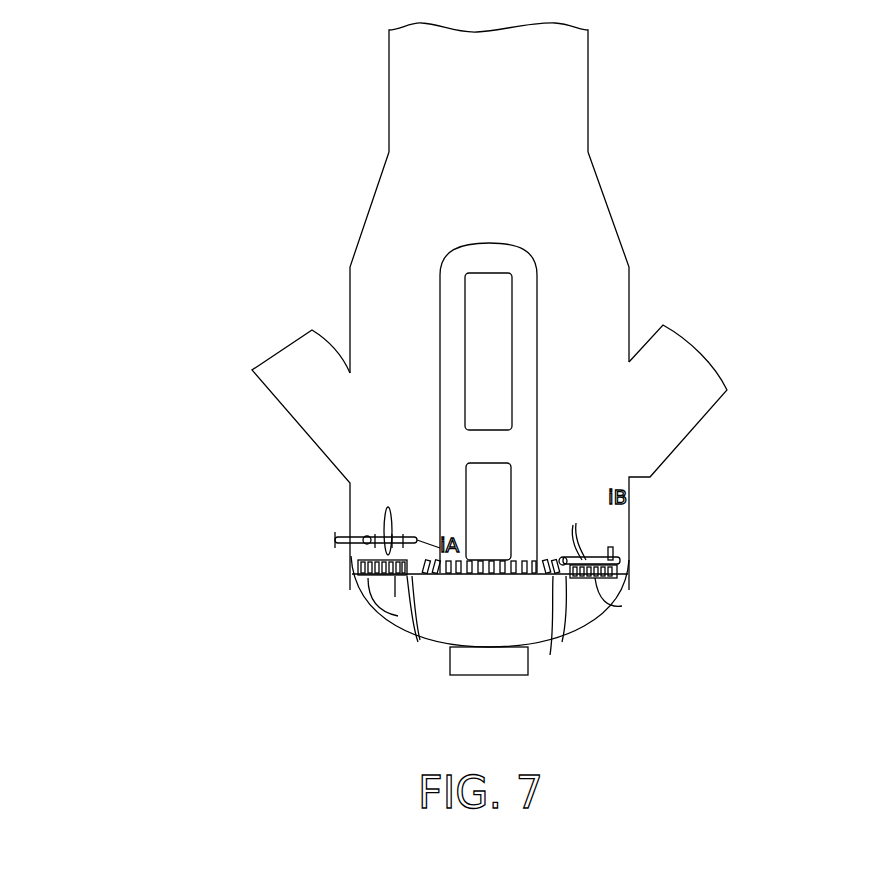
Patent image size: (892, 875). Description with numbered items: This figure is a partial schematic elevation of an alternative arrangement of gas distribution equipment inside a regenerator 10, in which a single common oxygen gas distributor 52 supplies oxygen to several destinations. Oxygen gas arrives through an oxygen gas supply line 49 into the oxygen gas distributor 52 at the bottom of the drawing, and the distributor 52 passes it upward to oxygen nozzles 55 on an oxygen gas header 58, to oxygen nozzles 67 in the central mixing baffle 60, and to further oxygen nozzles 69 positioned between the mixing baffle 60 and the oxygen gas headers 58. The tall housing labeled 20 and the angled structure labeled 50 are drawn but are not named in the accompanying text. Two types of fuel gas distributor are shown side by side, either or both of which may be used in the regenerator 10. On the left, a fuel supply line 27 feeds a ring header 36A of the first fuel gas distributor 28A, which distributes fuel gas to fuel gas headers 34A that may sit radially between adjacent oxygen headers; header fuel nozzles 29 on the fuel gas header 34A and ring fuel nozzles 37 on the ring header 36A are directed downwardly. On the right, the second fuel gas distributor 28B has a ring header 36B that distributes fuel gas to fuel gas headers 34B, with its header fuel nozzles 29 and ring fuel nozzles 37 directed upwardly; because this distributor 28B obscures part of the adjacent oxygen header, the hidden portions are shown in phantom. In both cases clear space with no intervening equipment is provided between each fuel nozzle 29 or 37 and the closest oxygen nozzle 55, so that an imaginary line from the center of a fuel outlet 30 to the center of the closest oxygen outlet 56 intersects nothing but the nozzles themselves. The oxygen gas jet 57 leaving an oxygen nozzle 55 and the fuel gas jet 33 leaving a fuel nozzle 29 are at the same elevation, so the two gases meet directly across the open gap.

The regenerator 10 is at (166, 459).
The housing 20 is at (588, 128).
The fuel supply line 27 is at (322, 534).
The first fuel gas distributor 28A is at (365, 537).
The second fuel gas distributor 28B is at (620, 570).
The header fuel nozzle 29 is at (386, 507).
The fuel outlet 30 is at (420, 546).
The fuel gas jet 33 is at (366, 576).
The fuel gas header 34A is at (378, 536).
The fuel gas header 34B is at (612, 552).
The ring header 36A is at (364, 536).
The ring header 36B is at (560, 558).
The ring fuel nozzle 37 is at (360, 544).
The oxygen gas supply line 49 is at (484, 688).
The wing 50 is at (350, 292).
The oxygen gas distributor 52 is at (490, 615).
The oxygen nozzle 55 is at (364, 573).
The oxygen outlet 56 is at (410, 578).
The oxygen gas jet 57 is at (715, 518).
The oxygen gas header 58 is at (365, 609).
The mixing baffle 60 is at (537, 335).
The oxygen nozzle 67 is at (466, 576).
The oxygen nozzle 69 is at (549, 656).